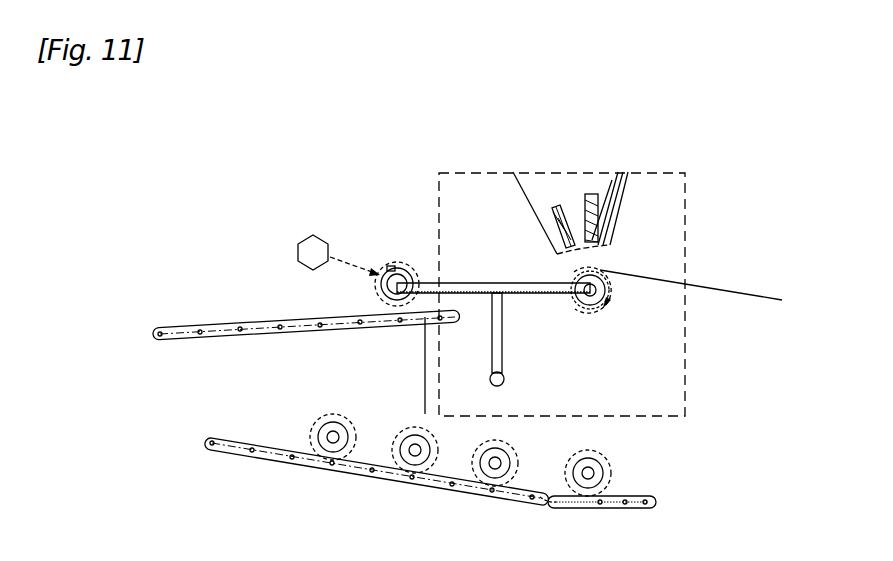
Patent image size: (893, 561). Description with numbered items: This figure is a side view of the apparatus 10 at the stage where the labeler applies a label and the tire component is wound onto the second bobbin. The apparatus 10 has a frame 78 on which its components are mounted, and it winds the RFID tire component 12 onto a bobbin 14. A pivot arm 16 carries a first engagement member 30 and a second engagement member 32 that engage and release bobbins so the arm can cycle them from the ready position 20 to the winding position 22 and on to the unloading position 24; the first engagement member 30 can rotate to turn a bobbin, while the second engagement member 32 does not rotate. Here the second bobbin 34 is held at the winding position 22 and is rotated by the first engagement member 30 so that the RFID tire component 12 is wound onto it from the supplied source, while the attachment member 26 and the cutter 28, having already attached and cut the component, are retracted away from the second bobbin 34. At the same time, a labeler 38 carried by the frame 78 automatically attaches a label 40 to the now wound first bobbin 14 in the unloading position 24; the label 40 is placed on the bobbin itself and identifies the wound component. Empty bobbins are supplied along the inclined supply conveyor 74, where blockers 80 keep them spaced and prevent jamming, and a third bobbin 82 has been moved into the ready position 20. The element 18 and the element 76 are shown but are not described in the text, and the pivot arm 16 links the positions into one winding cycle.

The apparatus 10 is at (707, 178).
The RFID tire component 12 is at (715, 290).
The bobbin 14 is at (383, 327).
The pivot arm 16 is at (495, 283).
The vertical bar with ball end 18 is at (505, 377).
The ready position 20 is at (620, 452).
The winding position 22 is at (620, 252).
The unloading position 24 is at (372, 252).
The attachment member 26 is at (605, 212).
The cutter 28 is at (558, 225).
The first engagement member 30 is at (580, 292).
The second engagement member 32 is at (385, 287).
The second bobbin 34 is at (612, 290).
The labeler 38 is at (305, 240).
The label 40 is at (393, 268).
The supply conveyor 74 is at (215, 449).
The upper rail 76 is at (232, 321).
The frame 78 is at (458, 173).
The blockers 80 is at (527, 506).
The third bobbin 82 is at (612, 497).